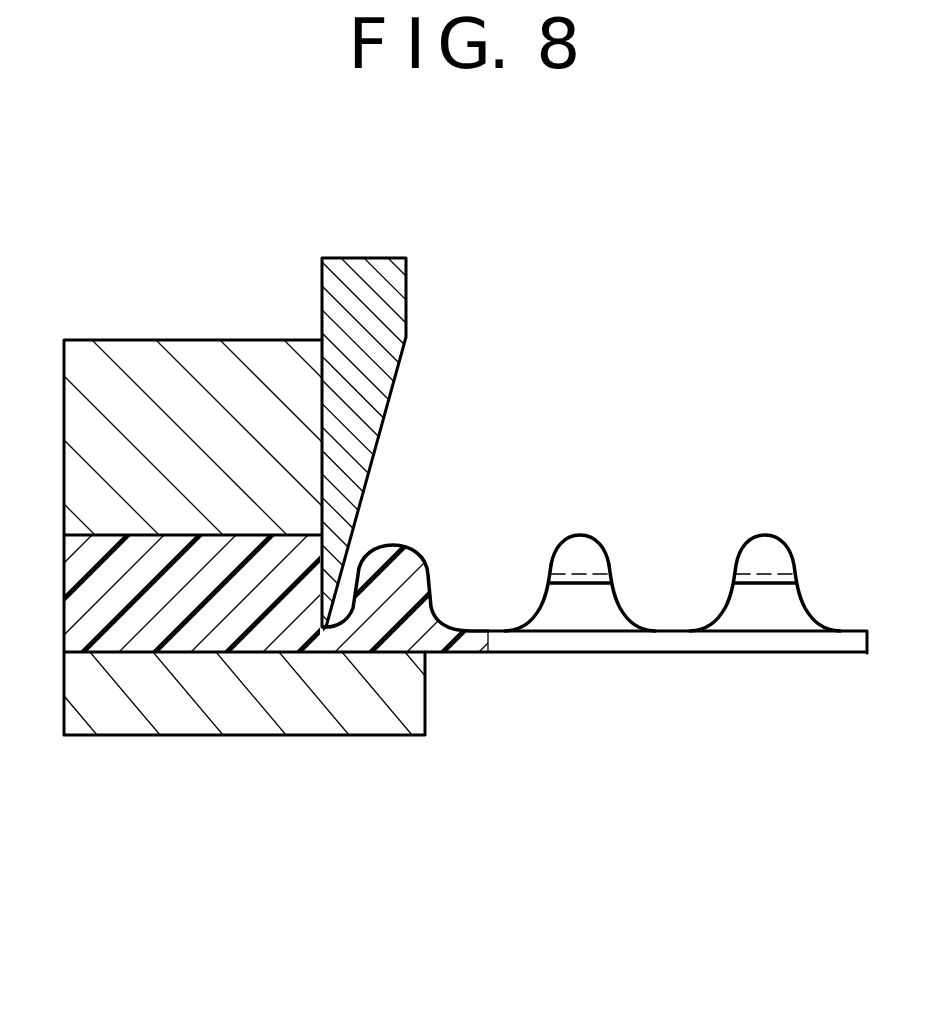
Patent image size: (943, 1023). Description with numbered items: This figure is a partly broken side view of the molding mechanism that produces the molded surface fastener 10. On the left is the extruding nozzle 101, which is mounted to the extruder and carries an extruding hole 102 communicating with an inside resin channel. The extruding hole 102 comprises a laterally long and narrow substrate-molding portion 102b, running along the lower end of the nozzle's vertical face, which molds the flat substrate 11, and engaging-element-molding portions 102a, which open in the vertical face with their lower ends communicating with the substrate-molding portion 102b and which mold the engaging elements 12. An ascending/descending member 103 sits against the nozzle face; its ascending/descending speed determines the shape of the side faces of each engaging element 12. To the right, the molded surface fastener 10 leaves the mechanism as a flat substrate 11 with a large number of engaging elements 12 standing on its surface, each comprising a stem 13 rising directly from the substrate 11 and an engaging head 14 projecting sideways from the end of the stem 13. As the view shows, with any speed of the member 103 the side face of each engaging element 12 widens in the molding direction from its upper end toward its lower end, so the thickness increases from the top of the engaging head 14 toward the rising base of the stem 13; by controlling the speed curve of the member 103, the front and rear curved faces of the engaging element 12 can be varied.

The molded surface fastener 10 is at (595, 601).
The flat substrate 11 is at (577, 642).
The engaging element 12 is at (421, 527).
The stem 13 is at (605, 605).
The engaging head 14 is at (580, 553).
The extruding nozzle 101 is at (188, 340).
The extruding hole 102 is at (334, 704).
The engaging-element-molding portion 102a is at (344, 578).
The substrate-molding portion 102b is at (315, 662).
The ascending/descending member 103 is at (393, 306).